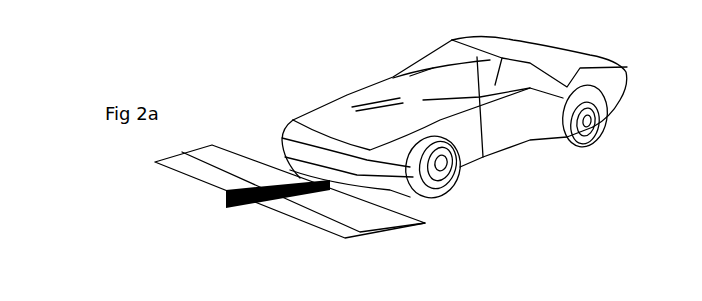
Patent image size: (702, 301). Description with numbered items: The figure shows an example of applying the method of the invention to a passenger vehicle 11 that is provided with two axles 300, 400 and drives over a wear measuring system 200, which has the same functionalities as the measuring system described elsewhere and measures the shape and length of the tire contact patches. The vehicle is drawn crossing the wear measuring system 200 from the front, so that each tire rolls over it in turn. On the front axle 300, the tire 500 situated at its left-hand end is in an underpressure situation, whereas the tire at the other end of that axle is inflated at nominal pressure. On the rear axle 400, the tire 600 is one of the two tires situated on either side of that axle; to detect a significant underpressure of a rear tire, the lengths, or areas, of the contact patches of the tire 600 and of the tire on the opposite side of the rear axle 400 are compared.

The passenger vehicle 11 is at (495, 162).
The wear measuring system 200 is at (317, 232).
The axle 300 is at (437, 172).
The rear axle 400 is at (582, 128).
The tire 500 is at (458, 182).
The tire 600 is at (602, 123).